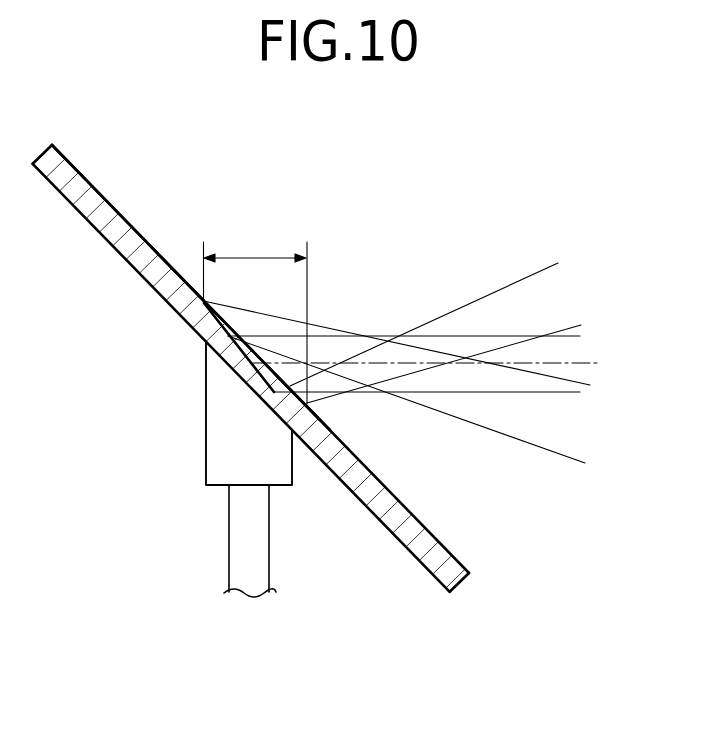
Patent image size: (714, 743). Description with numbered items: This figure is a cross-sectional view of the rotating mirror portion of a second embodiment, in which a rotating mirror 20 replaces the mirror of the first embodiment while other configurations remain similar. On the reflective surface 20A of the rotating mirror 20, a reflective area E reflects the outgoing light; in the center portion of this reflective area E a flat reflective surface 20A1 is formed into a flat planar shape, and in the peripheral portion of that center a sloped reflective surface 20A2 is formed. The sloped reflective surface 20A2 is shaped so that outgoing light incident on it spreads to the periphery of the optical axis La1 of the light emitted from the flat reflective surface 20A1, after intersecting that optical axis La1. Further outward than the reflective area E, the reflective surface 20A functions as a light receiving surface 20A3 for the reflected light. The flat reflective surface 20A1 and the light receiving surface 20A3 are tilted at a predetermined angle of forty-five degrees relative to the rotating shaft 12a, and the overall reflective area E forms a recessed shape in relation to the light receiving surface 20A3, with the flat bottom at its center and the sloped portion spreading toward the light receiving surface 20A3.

The rotating mirror 20 is at (430, 573).
The reflective surface 20A is at (392, 134).
The flat reflective surface 20A1 is at (266, 381).
The sloped reflective surface 20A2 is at (290, 386).
The light receiving surface 20A3 is at (152, 246).
The rotating shaft 12a is at (269, 568).
The optical axis La1 is at (579, 364).
The reflective area E is at (256, 318).